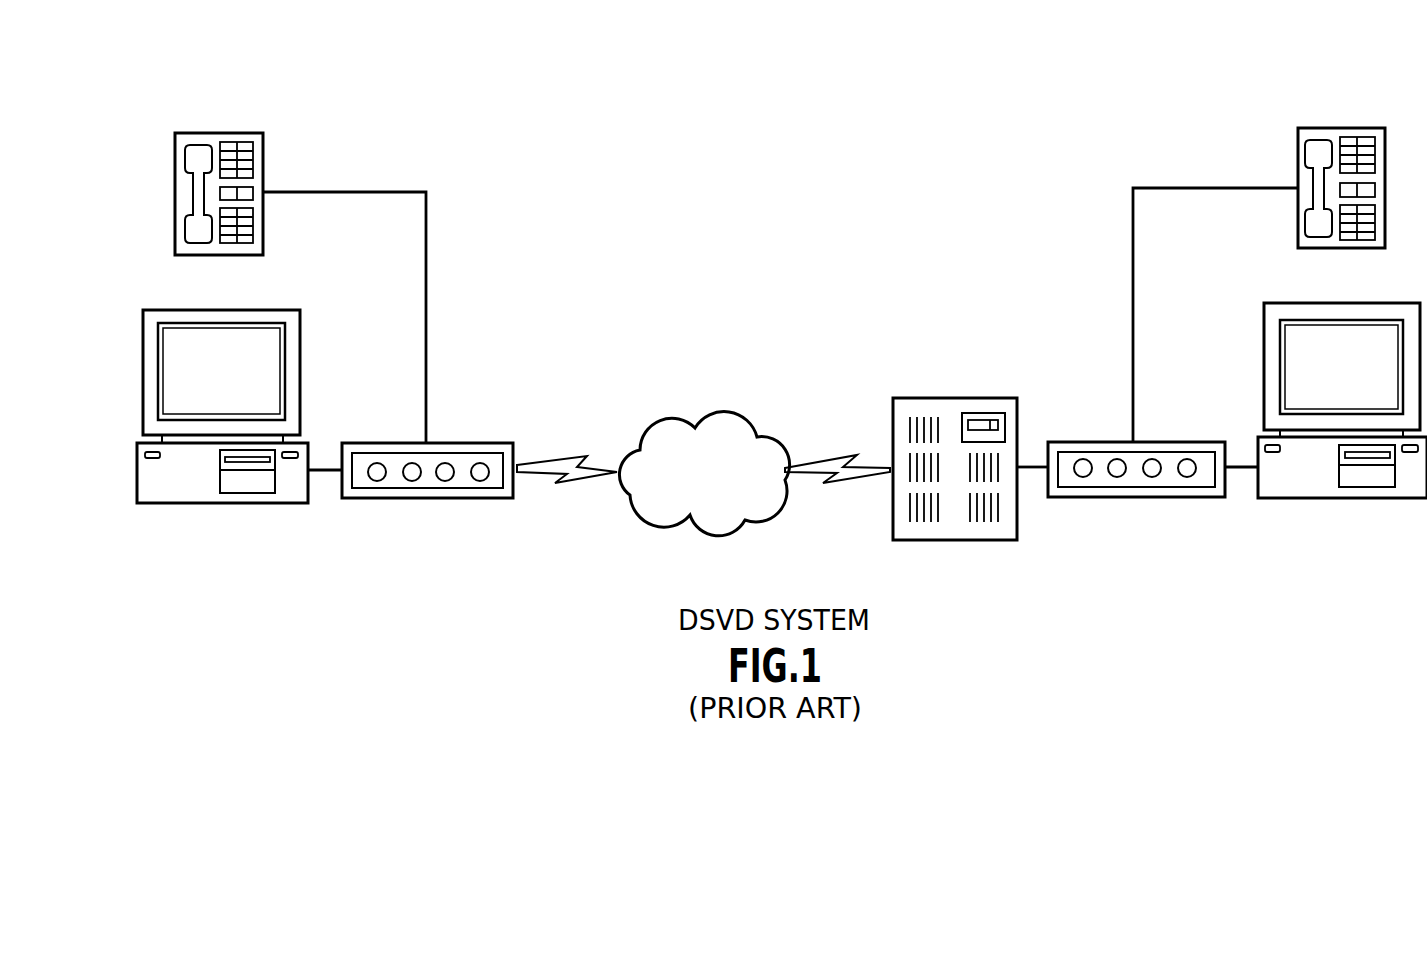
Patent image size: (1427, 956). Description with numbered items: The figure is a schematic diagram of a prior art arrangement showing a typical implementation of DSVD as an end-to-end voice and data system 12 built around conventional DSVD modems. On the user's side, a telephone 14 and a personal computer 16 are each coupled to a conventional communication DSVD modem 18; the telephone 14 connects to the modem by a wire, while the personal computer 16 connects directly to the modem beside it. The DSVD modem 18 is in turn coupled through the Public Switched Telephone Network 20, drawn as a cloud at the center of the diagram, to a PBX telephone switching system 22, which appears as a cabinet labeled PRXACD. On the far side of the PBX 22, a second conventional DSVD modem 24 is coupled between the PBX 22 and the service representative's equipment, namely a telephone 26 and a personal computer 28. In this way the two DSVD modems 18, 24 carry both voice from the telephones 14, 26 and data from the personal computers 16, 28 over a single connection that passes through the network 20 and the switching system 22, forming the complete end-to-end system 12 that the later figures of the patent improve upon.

The end-to-end voice and data system 12 is at (1190, 86).
The telephone 14 is at (220, 133).
The personal computer 16 is at (300, 365).
The DSVD modem 18 is at (470, 443).
The Public Switched Telephone Network 20 is at (729, 417).
The PBX telephone switching system 22 is at (954, 398).
The second DSVD modem 24 is at (1179, 442).
The telephone 26 is at (1343, 128).
The personal computer 28 is at (1264, 336).